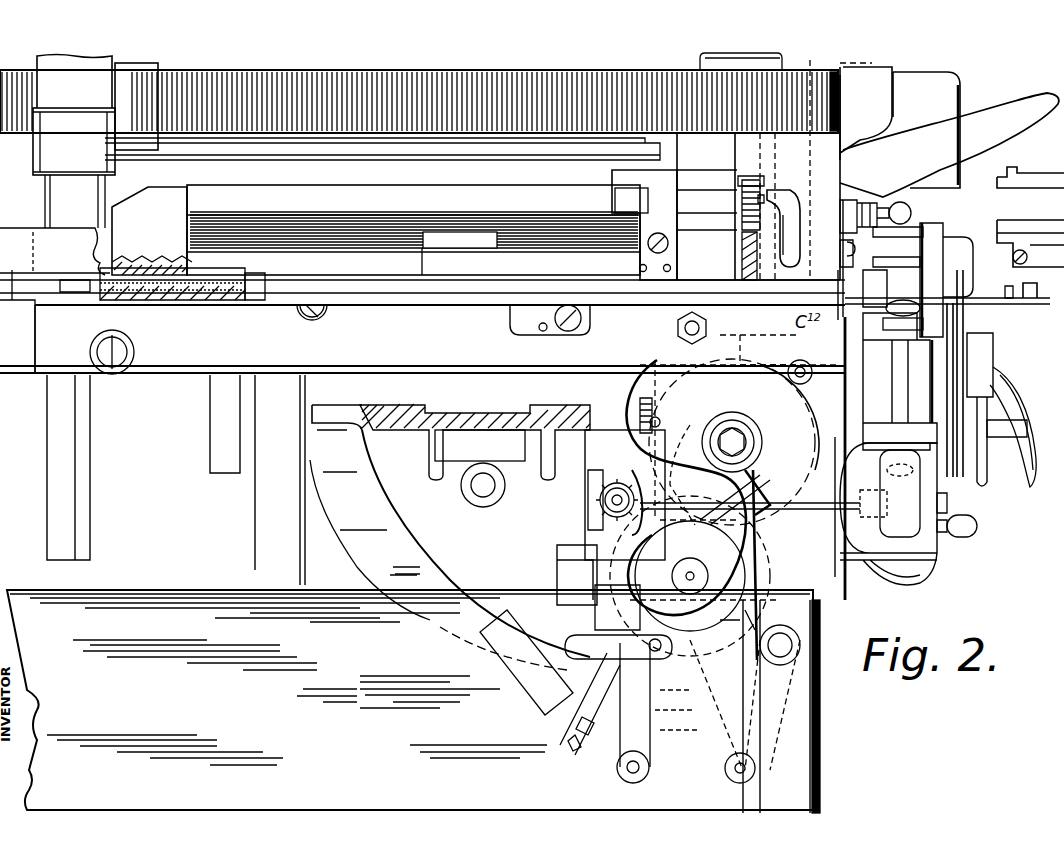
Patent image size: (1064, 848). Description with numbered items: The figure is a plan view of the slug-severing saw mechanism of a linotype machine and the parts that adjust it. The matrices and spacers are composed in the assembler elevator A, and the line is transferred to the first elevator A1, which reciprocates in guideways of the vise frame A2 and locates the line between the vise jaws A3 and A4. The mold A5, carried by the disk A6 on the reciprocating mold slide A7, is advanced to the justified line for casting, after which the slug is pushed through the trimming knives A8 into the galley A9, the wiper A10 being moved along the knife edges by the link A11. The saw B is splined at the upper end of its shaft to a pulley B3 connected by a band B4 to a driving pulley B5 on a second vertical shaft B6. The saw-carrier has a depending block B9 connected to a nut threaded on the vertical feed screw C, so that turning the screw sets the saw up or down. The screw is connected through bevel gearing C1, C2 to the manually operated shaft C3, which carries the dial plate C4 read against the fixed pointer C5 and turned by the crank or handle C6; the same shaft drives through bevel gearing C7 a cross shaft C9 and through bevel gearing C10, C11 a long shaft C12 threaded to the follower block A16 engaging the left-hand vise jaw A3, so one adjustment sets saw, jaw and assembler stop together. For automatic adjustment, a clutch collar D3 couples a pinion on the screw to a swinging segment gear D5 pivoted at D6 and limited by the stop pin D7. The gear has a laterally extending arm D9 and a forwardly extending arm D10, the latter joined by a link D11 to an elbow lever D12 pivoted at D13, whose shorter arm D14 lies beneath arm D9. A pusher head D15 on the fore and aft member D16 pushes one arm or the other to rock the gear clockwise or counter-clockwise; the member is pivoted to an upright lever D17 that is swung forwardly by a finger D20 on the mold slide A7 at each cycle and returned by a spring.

The assembler elevator A is at (1030, 217).
The first elevator A1 is at (480, 468).
The vise frame A2 is at (590, 408).
The left-hand vise jaw A3 is at (413, 230).
The vise jaw A4 is at (644, 225).
The mold A5 is at (522, 160).
The disk A6 is at (530, 70).
The mold slide A7 is at (680, 60).
The trimming knives A8 is at (738, 180).
The galley A9 is at (410, 620).
The wiper A10 is at (1014, 410).
The link A11 is at (1016, 306).
The follower block A16 is at (152, 231).
The saw B is at (774, 427).
The pulley B3 is at (657, 415).
The band B4 is at (680, 482).
The driving pulley B5 is at (765, 575).
The second vertical shaft B6 is at (735, 515).
The depending block B9 is at (558, 552).
The feed screw C is at (598, 500).
The bevel gearing C1 is at (592, 486).
The bevel gearing C2 is at (588, 470).
The manually operated shaft C3 is at (820, 520).
The dial plate C4 is at (952, 590).
The fixed pointer C5 is at (938, 546).
The crank or handle C6 is at (969, 522).
The bevel gearing C7 is at (887, 515).
The cross shaft C9 is at (904, 400).
The bevel gearing C10 is at (903, 302).
The bevel gearing C11 is at (949, 180).
The long shaft C12 is at (173, 301).
The clutch collar D3 is at (680, 708).
The segment gear D5 is at (695, 576).
The pivot D6 is at (658, 695).
The stop pin D7 is at (610, 740).
The laterally extending arm D9 is at (689, 731).
The forwardly extending arm D10 is at (610, 748).
The link D11 is at (630, 792).
The elbow lever D12 is at (755, 748).
The pivot D13 is at (820, 626).
The shorter arm D14 is at (756, 613).
The pusher head D15 is at (756, 200).
The fore and aft member or link D16 is at (763, 334).
The upright lever D17 is at (740, 260).
The finger D20 is at (760, 158).